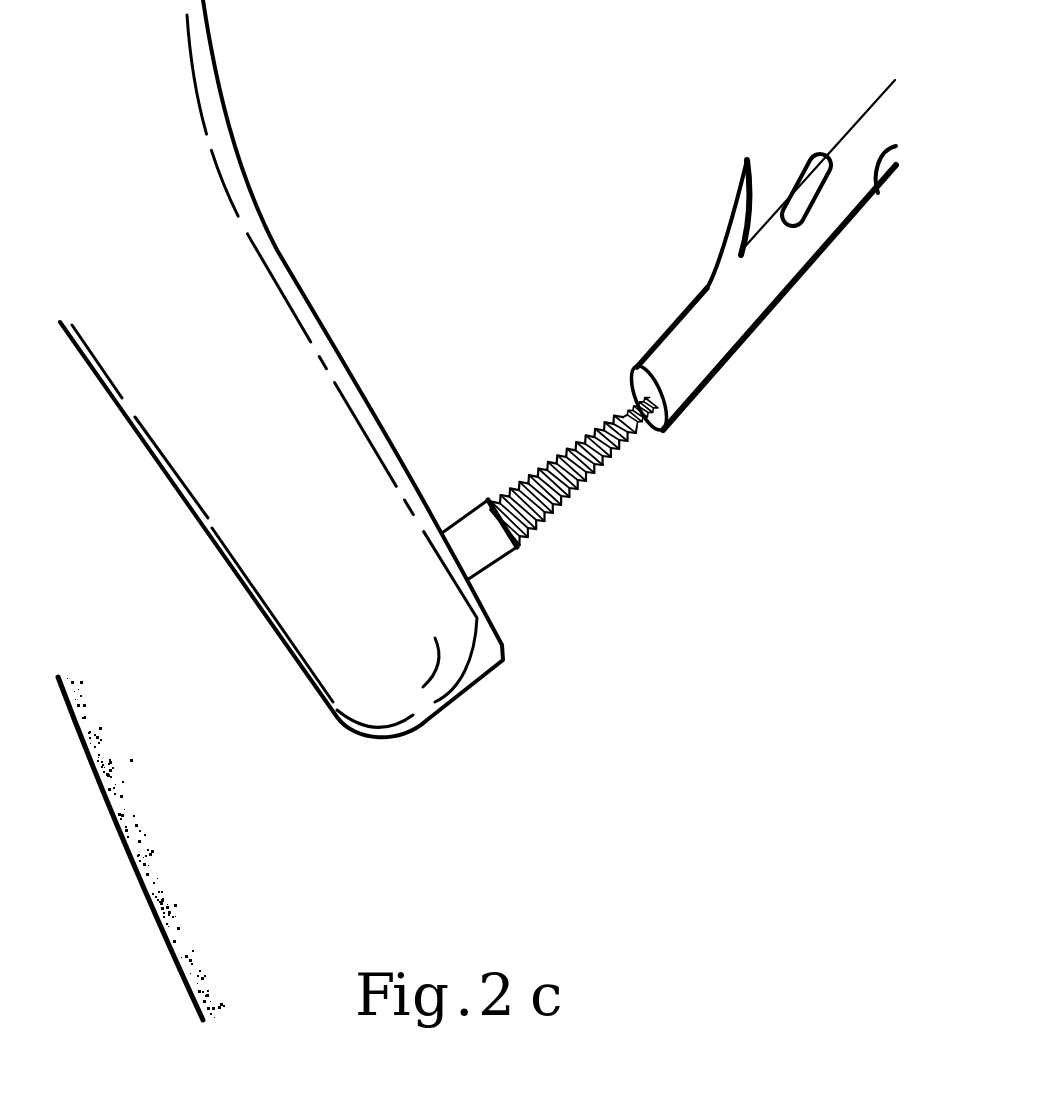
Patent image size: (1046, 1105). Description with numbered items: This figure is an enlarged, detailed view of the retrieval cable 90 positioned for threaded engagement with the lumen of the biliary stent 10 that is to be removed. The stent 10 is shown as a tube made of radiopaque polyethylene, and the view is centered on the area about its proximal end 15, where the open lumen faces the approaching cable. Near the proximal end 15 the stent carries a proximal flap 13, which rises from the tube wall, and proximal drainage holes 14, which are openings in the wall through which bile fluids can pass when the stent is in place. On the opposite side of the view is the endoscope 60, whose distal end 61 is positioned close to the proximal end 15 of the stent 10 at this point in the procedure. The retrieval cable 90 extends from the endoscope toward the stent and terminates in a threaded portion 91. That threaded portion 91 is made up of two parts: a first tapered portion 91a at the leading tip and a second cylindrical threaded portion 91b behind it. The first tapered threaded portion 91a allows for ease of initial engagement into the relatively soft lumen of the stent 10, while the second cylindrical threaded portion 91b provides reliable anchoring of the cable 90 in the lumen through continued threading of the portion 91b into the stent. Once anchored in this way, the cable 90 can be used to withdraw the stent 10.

The biliary stent 10 is at (728, 352).
The proximal flap 13 is at (737, 208).
The proximal drainage holes 14 is at (877, 172).
The proximal end 15 is at (630, 382).
The endoscope 60 is at (243, 198).
The distal end 61 is at (440, 717).
The retrieval cable 90 is at (463, 521).
The threaded portion 91 is at (574, 503).
The first tapered portion 91a is at (618, 452).
The second cylindrical threaded portion 91b is at (546, 518).